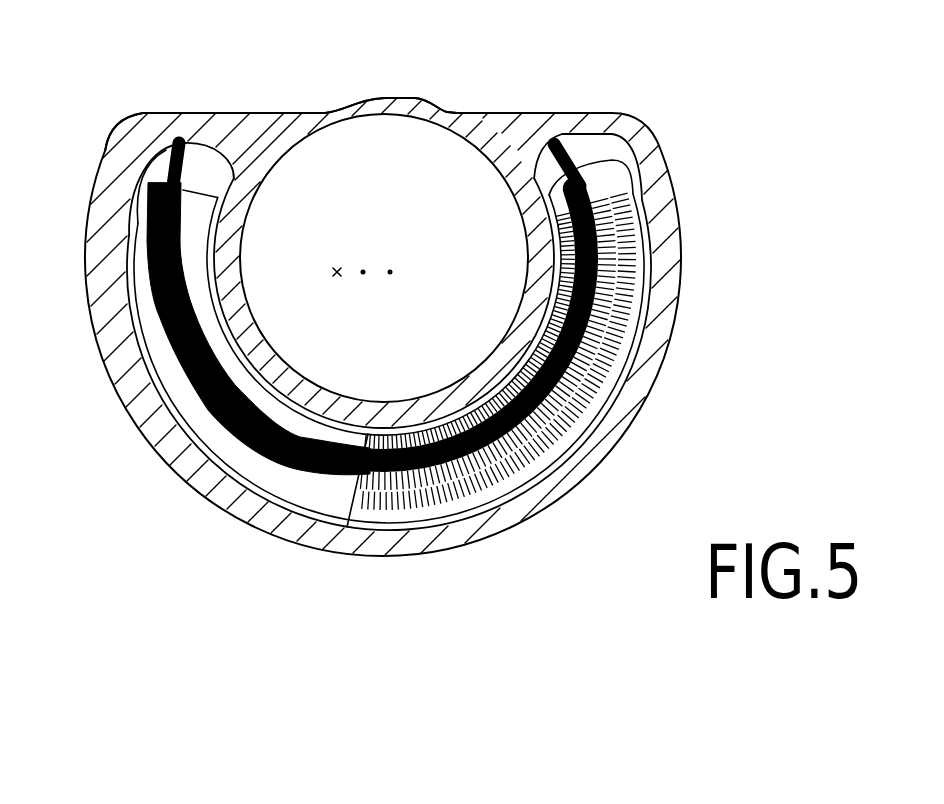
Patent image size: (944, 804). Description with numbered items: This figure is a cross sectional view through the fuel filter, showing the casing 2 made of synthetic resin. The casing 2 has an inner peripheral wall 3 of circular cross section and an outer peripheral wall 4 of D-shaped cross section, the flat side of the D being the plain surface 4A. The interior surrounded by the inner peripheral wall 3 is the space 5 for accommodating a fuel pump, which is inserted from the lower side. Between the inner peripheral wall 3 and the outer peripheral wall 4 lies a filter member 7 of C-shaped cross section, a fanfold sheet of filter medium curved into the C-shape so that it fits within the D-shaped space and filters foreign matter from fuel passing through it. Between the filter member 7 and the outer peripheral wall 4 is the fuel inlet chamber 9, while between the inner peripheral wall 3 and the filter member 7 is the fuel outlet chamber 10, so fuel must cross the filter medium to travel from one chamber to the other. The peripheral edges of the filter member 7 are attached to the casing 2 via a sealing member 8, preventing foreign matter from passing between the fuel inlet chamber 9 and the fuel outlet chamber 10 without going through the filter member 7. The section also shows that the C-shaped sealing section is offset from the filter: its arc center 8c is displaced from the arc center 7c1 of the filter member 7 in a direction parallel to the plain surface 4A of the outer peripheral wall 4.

The casing 2 is at (512, 128).
The inner peripheral wall 3 is at (480, 378).
The outer peripheral wall 4 is at (660, 332).
The plain surface 4A is at (243, 110).
The space 5 is at (340, 268).
The filter member 7 is at (605, 376).
The center of the arc of the C-shape of the filter member 7c1 is at (390, 274).
The sealing member 8 is at (180, 363).
The center of the arc of the C-shape of the upper sealing section 8c is at (363, 272).
The fuel inlet chamber 9 is at (647, 248).
The fuel outlet chamber 10 is at (557, 280).